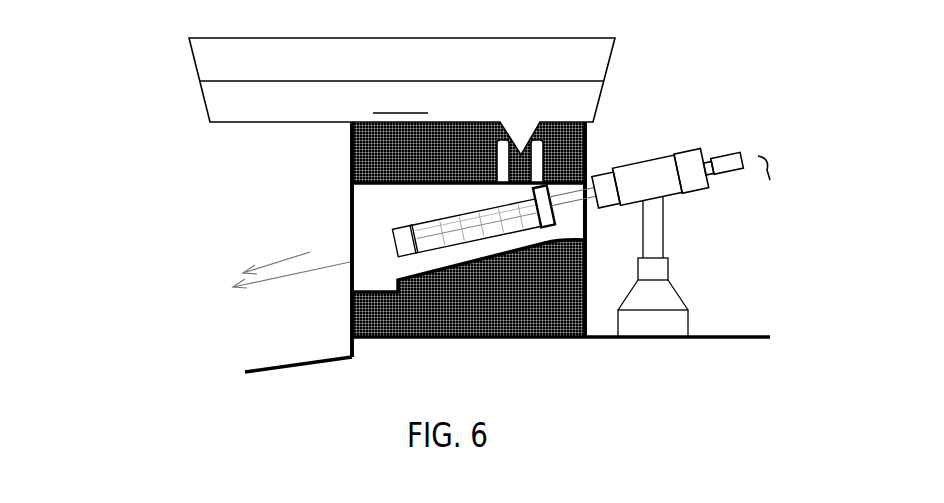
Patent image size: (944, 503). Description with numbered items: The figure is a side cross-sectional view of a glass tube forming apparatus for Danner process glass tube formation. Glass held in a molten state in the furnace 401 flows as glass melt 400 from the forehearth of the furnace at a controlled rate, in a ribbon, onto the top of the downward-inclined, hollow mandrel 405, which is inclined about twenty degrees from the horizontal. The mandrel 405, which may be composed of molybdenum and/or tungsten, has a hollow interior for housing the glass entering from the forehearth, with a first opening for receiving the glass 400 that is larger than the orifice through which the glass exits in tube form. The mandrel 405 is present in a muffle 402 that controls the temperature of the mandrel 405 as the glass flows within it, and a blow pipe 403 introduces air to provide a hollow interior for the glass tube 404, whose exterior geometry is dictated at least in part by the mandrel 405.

The glass melt 400 is at (525, 191).
The furnace 401 is at (170, 38).
The muffle 402 is at (380, 265).
The blow pipe 403 is at (771, 180).
The glass tube 404 is at (243, 283).
The mandrel 405 is at (435, 225).